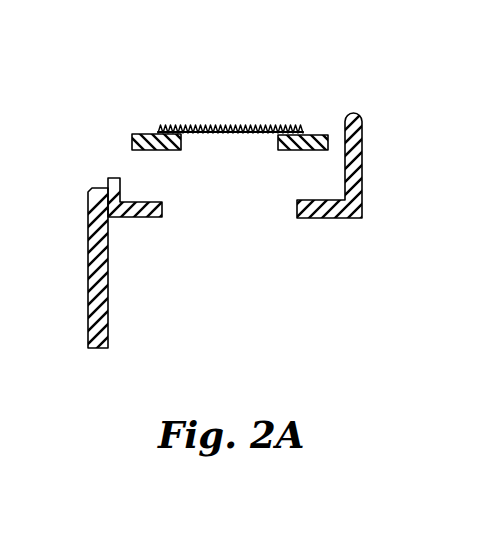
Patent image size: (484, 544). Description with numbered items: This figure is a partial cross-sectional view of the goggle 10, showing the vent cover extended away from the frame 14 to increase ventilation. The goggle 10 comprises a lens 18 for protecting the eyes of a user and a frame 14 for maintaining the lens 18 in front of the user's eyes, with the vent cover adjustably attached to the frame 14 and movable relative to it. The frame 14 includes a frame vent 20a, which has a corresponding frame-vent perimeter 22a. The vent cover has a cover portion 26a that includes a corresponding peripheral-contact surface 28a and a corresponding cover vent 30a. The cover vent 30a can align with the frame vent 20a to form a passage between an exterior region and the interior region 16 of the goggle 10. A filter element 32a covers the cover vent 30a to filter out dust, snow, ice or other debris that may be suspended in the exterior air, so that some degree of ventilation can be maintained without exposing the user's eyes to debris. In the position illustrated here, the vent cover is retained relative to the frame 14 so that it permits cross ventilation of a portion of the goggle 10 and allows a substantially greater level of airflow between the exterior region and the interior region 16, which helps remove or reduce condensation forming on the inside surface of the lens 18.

The goggle 10 is at (128, 95).
The frame 14 is at (365, 168).
The interior region 16 is at (242, 293).
The lens 18 is at (88, 336).
The frame vent 20a is at (298, 207).
The frame-vent perimeter 22a is at (147, 201).
The cover portion 26a is at (132, 139).
The peripheral-contact surface 28a is at (163, 151).
The cover vent 30a is at (178, 125).
The filter element 32a is at (262, 128).